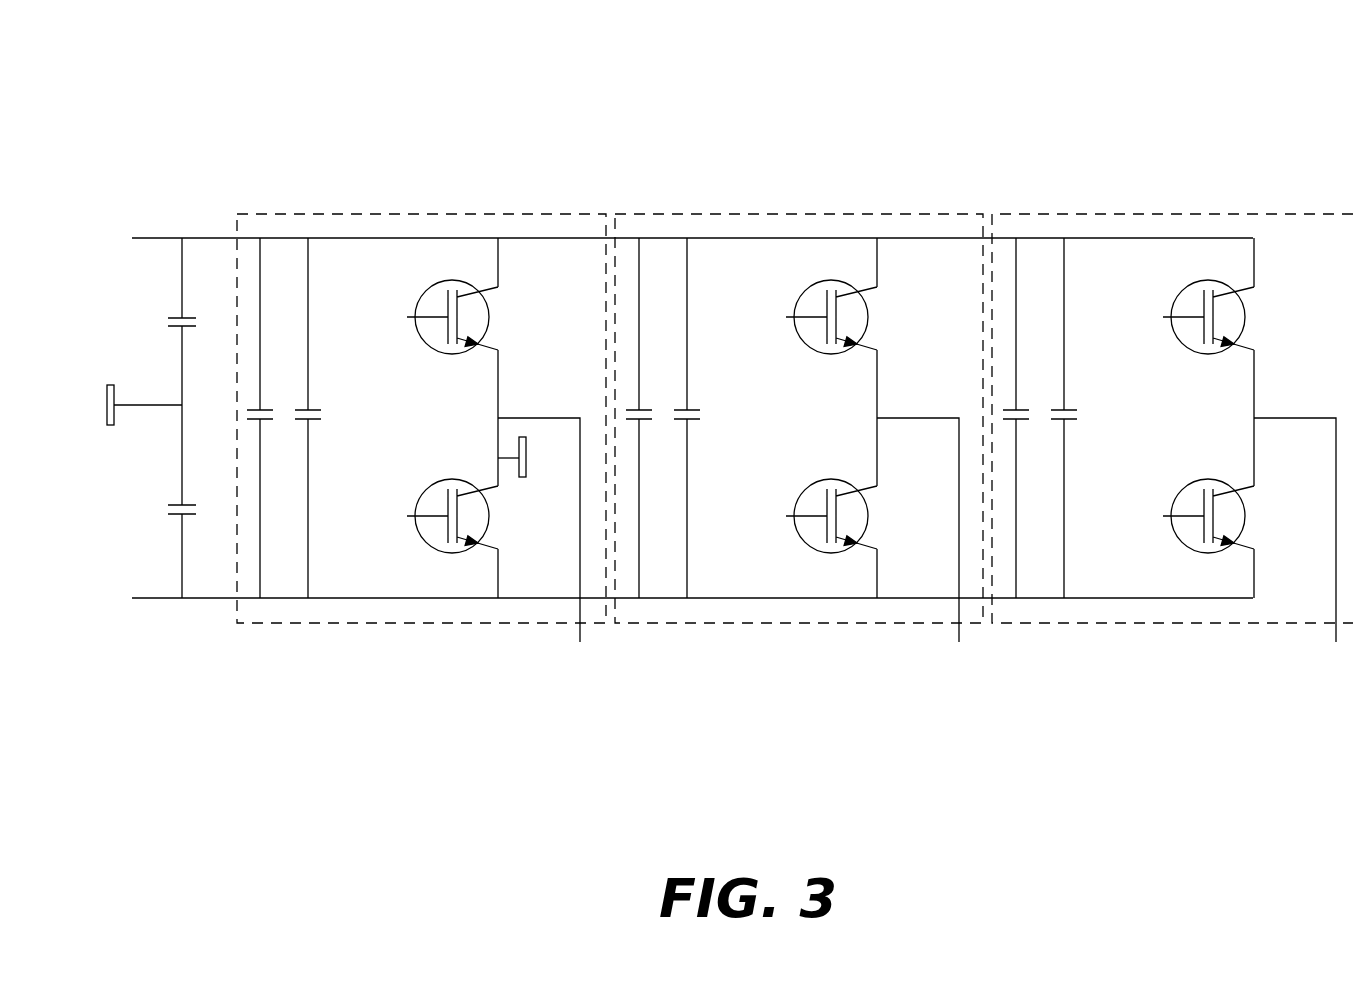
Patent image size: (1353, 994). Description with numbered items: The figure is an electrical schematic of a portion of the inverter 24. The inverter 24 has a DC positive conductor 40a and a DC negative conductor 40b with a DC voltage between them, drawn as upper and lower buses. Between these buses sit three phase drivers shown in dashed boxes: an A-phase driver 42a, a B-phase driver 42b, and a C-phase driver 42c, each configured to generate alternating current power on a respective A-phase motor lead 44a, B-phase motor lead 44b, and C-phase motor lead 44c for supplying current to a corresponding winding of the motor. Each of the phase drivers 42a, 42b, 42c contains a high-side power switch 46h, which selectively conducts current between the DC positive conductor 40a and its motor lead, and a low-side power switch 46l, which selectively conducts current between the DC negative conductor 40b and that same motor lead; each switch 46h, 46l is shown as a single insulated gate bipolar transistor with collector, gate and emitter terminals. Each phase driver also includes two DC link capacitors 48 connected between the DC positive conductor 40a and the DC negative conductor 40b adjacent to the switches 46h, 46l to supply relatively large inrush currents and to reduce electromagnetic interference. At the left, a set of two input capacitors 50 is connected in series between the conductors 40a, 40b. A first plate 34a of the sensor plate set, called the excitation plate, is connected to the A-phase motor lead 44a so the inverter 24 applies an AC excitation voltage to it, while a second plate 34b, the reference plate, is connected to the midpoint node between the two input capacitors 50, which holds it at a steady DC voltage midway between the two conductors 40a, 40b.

The inverter 24 is at (259, 120).
The first plate 34a is at (522, 477).
The second plate 34b is at (120, 389).
The DC positive conductor 40a is at (170, 236).
The DC negative conductor 40b is at (163, 597).
The A-phase driver 42a is at (320, 214).
The B-phase driver 42b is at (682, 214).
The C-phase driver 42c is at (1035, 214).
The A-phase motor lead 44a is at (577, 637).
The B-phase motor lead 44b is at (956, 637).
The C-phase motor lead 44c is at (1333, 637).
The high-side power switch 46h is at (432, 292).
The low-side power switch 46l is at (430, 492).
The DC link capacitor 48 is at (262, 408).
The input capacitor 50 is at (175, 316).